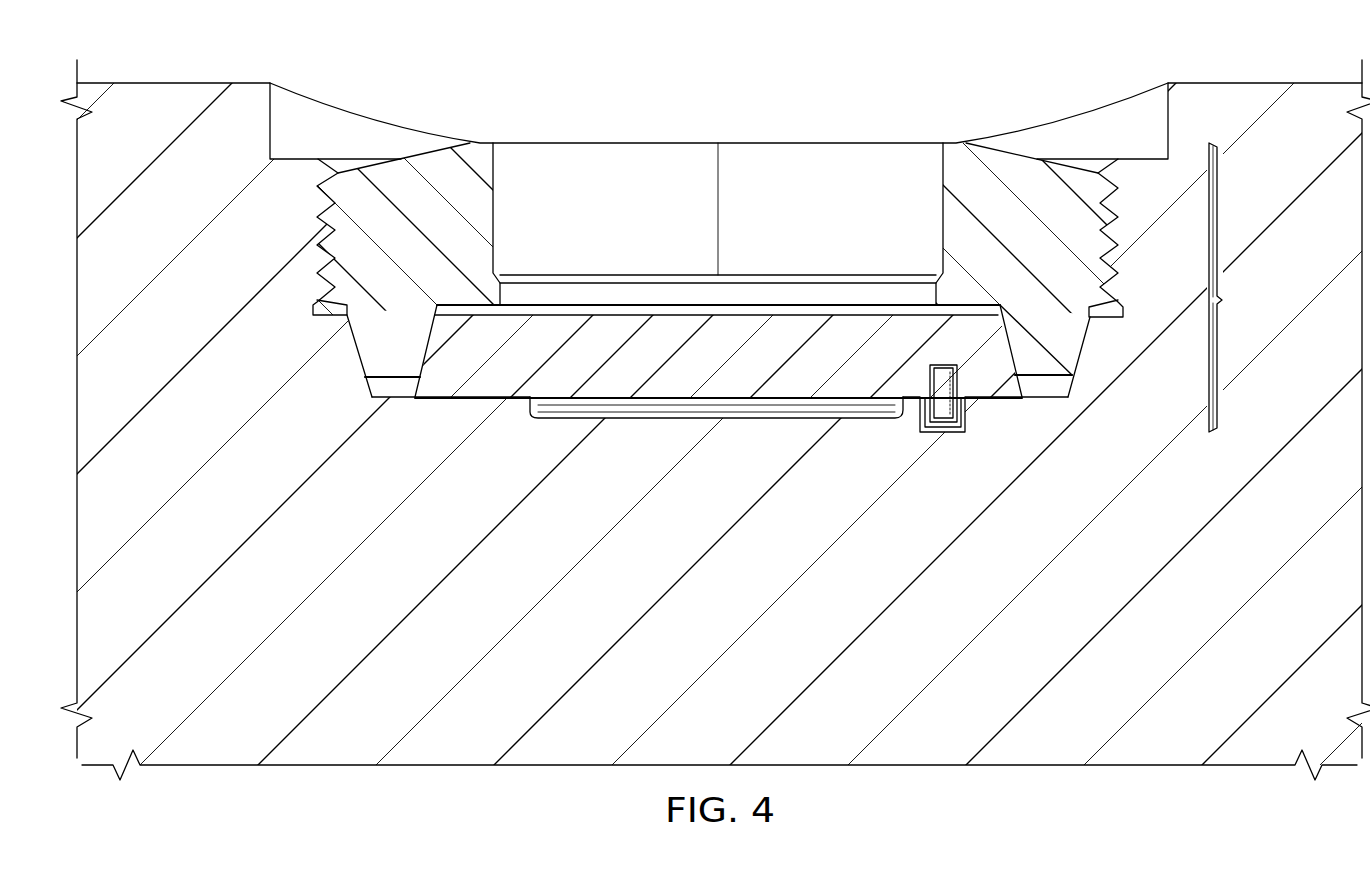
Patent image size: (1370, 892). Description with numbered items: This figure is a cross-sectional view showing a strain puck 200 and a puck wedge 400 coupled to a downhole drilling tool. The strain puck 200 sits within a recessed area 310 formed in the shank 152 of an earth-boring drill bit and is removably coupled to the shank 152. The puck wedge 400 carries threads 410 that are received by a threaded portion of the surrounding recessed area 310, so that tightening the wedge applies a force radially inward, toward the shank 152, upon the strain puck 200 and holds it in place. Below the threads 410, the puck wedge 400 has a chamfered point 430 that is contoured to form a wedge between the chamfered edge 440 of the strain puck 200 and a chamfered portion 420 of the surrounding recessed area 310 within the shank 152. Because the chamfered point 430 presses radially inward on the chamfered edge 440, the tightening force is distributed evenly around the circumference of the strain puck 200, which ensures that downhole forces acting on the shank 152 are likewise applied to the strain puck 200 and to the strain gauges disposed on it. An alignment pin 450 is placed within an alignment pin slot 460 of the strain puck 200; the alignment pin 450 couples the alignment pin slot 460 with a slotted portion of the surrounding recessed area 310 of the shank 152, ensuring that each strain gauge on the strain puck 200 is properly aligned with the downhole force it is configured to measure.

The shank 152 is at (741, 613).
The strain puck 200 is at (780, 334).
The recessed area 310 is at (1218, 294).
The puck wedge 400 is at (572, 101).
The threads 410 is at (320, 205).
The chamfered portion 420 is at (360, 362).
The chamfered point 430 is at (400, 386).
The chamfered edge 440 is at (430, 338).
The alignment pin 450 is at (957, 415).
The alignment pin slot 460 is at (937, 378).